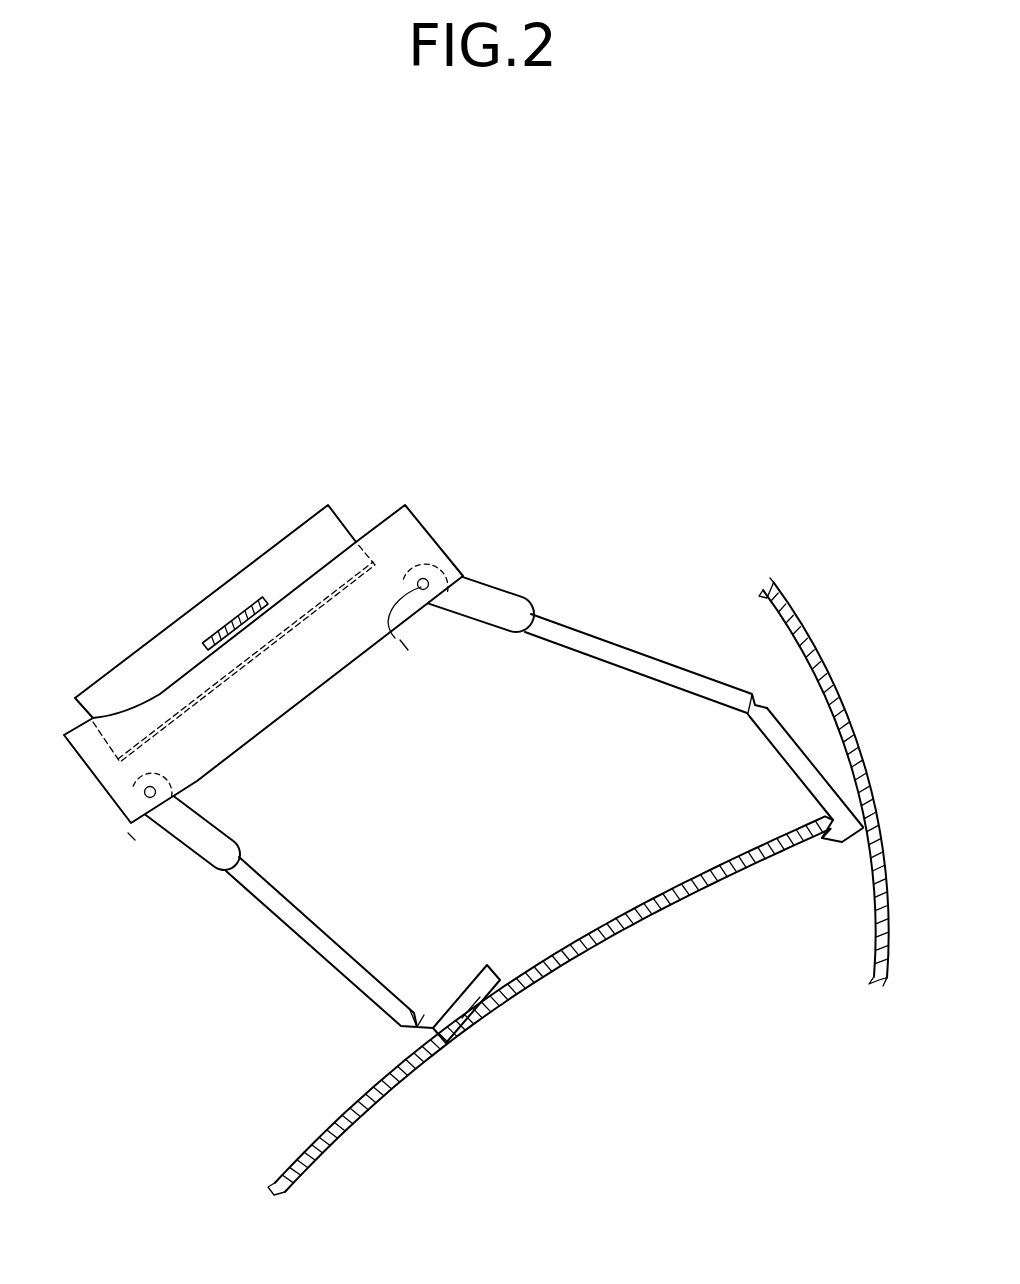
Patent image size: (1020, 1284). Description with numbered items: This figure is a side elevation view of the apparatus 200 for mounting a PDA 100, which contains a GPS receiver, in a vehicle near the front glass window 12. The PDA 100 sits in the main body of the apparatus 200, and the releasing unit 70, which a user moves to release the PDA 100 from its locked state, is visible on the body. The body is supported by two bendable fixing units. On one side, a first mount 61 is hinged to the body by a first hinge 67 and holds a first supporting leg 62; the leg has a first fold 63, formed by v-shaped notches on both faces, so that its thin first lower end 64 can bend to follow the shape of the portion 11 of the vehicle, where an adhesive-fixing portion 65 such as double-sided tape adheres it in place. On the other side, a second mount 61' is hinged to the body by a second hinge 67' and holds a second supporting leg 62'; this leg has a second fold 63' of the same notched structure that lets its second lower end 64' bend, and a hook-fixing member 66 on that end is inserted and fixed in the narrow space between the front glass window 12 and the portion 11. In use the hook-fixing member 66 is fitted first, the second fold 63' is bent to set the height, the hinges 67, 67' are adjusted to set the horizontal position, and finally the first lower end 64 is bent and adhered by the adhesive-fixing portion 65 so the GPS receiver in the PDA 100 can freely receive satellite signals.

The portion of the vehicle 11 is at (640, 908).
The front glass window 12 is at (827, 680).
The first mount 61 is at (185, 880).
The second mount 61' is at (470, 678).
The first supporting leg 62 is at (329, 955).
The second supporting leg 62' is at (646, 718).
The first fold 63 is at (377, 958).
The second fold 63' is at (745, 830).
The first lower end 64 is at (445, 956).
The second lower end 64' is at (840, 752).
The adhesive-fixing portion 65 is at (473, 1003).
The hook-fixing member 66 is at (832, 845).
The first hinge 67 is at (142, 855).
The second hinge 67' is at (410, 663).
The releasing unit 70 is at (227, 627).
The PDA 100 is at (122, 673).
The apparatus 200 is at (432, 466).